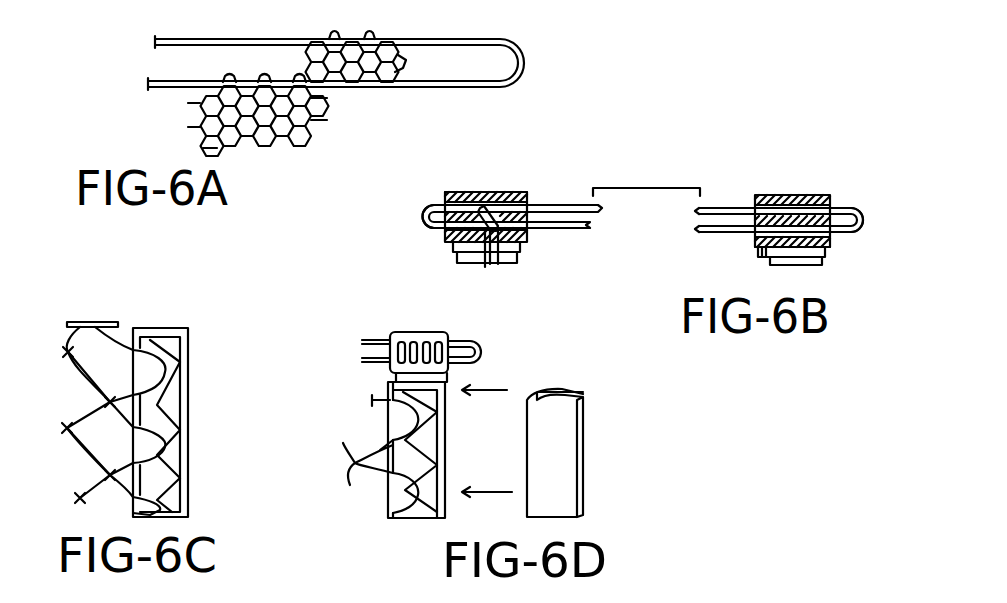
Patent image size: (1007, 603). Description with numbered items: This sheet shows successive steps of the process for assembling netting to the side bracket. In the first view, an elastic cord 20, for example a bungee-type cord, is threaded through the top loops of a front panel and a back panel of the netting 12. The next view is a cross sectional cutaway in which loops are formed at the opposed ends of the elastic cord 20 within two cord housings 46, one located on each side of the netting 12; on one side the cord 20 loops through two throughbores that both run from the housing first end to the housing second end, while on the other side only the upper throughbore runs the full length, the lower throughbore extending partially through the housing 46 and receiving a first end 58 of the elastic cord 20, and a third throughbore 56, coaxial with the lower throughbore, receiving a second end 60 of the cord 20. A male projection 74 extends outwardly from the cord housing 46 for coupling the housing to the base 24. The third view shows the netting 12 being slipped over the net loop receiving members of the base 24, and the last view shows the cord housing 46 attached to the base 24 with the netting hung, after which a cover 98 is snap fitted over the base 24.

In FIG. 6A, the netting 12 is at (318, 110).
In FIG. 6C, the netting 12 is at (72, 456).
In FIG. 6A, the elastic cord 20 is at (452, 41).
In FIG. 6C, the elastic cord 20 is at (90, 323).
In FIG. 6D, the elastic cord 20 is at (365, 338).
In FIG. 6C, the base 24 is at (155, 330).
In FIG. 6D, the base 24 is at (381, 497).
In FIG. 6D, the cord housing 46 is at (450, 330).
In FIG. 6B, the third throughbore 56 is at (510, 258).
In FIG. 6B, the first end of elastic cord 58 is at (486, 248).
In FIG. 6B, the second end of elastic cord 60 is at (493, 240).
In FIG. 6B, the male projection 74 is at (812, 264).
In FIG. 6D, the cover 98 is at (583, 460).